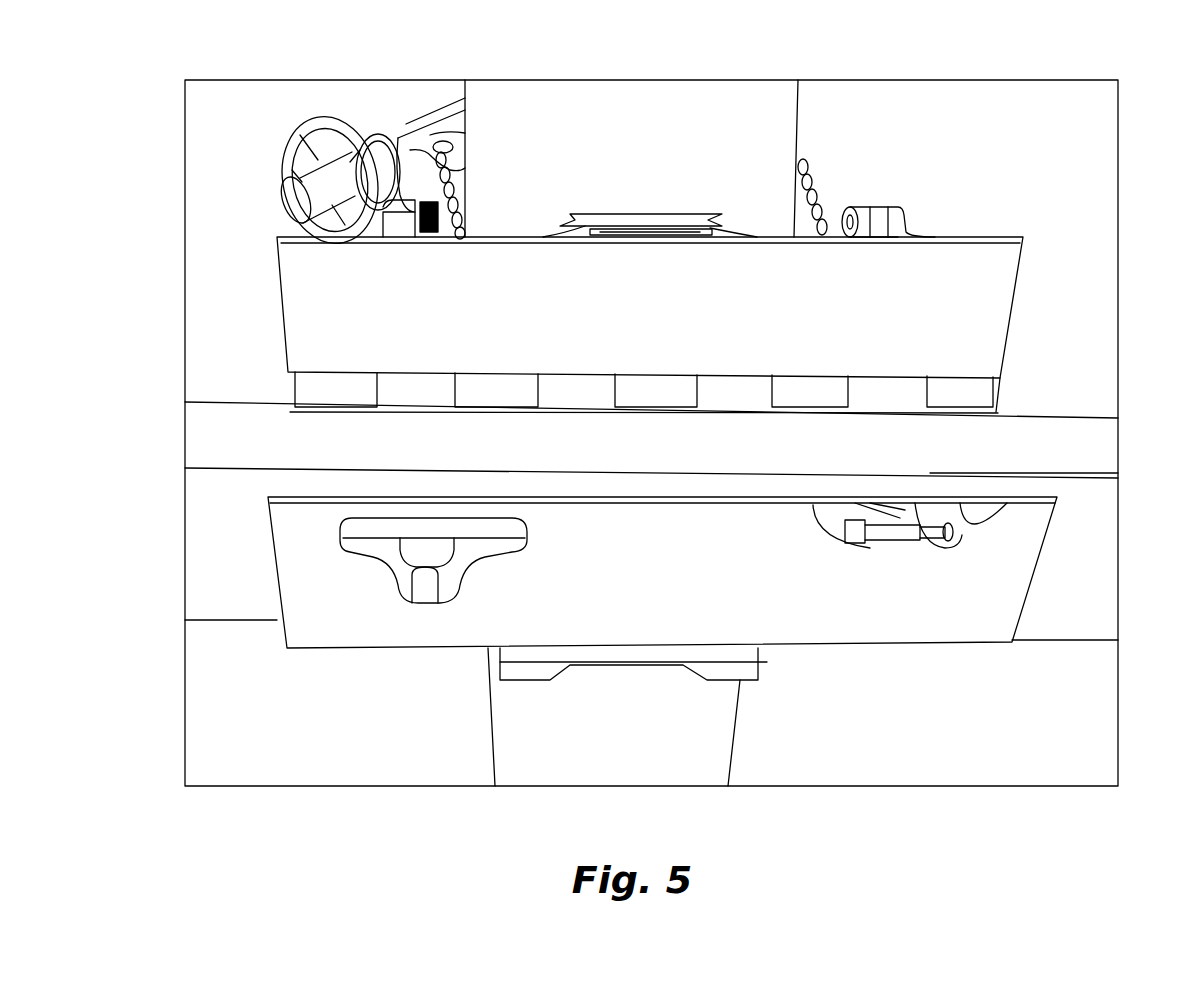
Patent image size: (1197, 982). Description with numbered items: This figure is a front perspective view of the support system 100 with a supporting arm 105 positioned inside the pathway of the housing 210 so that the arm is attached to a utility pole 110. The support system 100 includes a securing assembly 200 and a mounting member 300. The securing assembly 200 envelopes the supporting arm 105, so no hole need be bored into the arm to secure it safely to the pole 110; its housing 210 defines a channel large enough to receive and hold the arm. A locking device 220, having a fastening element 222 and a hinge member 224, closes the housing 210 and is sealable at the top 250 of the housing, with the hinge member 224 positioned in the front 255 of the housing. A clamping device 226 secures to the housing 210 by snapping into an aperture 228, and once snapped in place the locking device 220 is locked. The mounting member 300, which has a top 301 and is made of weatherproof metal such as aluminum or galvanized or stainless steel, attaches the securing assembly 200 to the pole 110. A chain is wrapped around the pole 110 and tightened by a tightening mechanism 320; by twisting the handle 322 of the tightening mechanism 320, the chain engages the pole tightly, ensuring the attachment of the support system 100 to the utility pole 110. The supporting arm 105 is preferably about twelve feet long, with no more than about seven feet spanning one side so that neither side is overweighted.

The support system 100 is at (975, 177).
The supporting arm 105 is at (240, 437).
The utility pole 110 is at (535, 121).
The securing assembly 200 is at (651, 632).
The housing 210 is at (685, 609).
The locking device 220 is at (690, 325).
The fastening element 222 is at (877, 186).
The hinge member 224 is at (572, 396).
The clamping device 226 is at (873, 206).
The aperture 228 is at (428, 573).
The top 250 is at (717, 503).
The front 255 is at (449, 642).
The mounting member 300 is at (666, 176).
The top 301 is at (692, 219).
The tightening mechanism 320 is at (408, 130).
The handle 322 is at (280, 147).